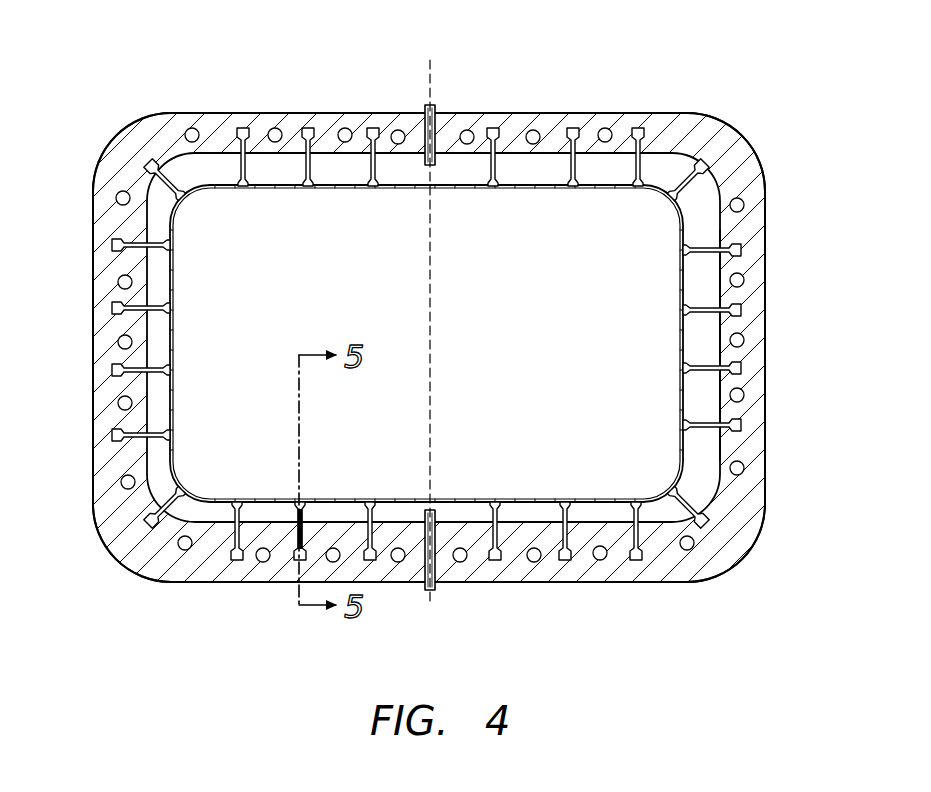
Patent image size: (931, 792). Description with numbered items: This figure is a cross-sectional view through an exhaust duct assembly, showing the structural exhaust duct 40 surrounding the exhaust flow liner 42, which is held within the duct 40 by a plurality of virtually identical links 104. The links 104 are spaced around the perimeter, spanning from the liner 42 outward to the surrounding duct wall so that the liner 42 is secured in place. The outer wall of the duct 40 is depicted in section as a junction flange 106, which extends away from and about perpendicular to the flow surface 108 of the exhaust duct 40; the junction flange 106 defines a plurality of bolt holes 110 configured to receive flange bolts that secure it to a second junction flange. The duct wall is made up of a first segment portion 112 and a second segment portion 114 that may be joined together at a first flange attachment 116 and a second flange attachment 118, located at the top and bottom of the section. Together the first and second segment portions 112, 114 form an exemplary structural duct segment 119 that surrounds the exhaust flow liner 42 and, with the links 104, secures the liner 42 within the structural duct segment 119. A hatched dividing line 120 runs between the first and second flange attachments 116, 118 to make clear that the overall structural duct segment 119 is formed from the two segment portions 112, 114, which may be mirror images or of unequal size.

The structural duct segment 119 is at (636, 56).
The first segment portion 112 is at (138, 116).
The second segment portion 114 is at (726, 113).
The junction flange 106 is at (610, 116).
The structural exhaust duct 40 is at (712, 296).
The bolt holes 110 is at (649, 609).
The exhaust flow liner 42 is at (685, 377).
The links 104 is at (310, 163).
The flow surface 108 is at (590, 156).
The first flange attachment 116 is at (437, 107).
The second flange attachment 118 is at (437, 587).
The hatched dividing line 120 is at (433, 358).